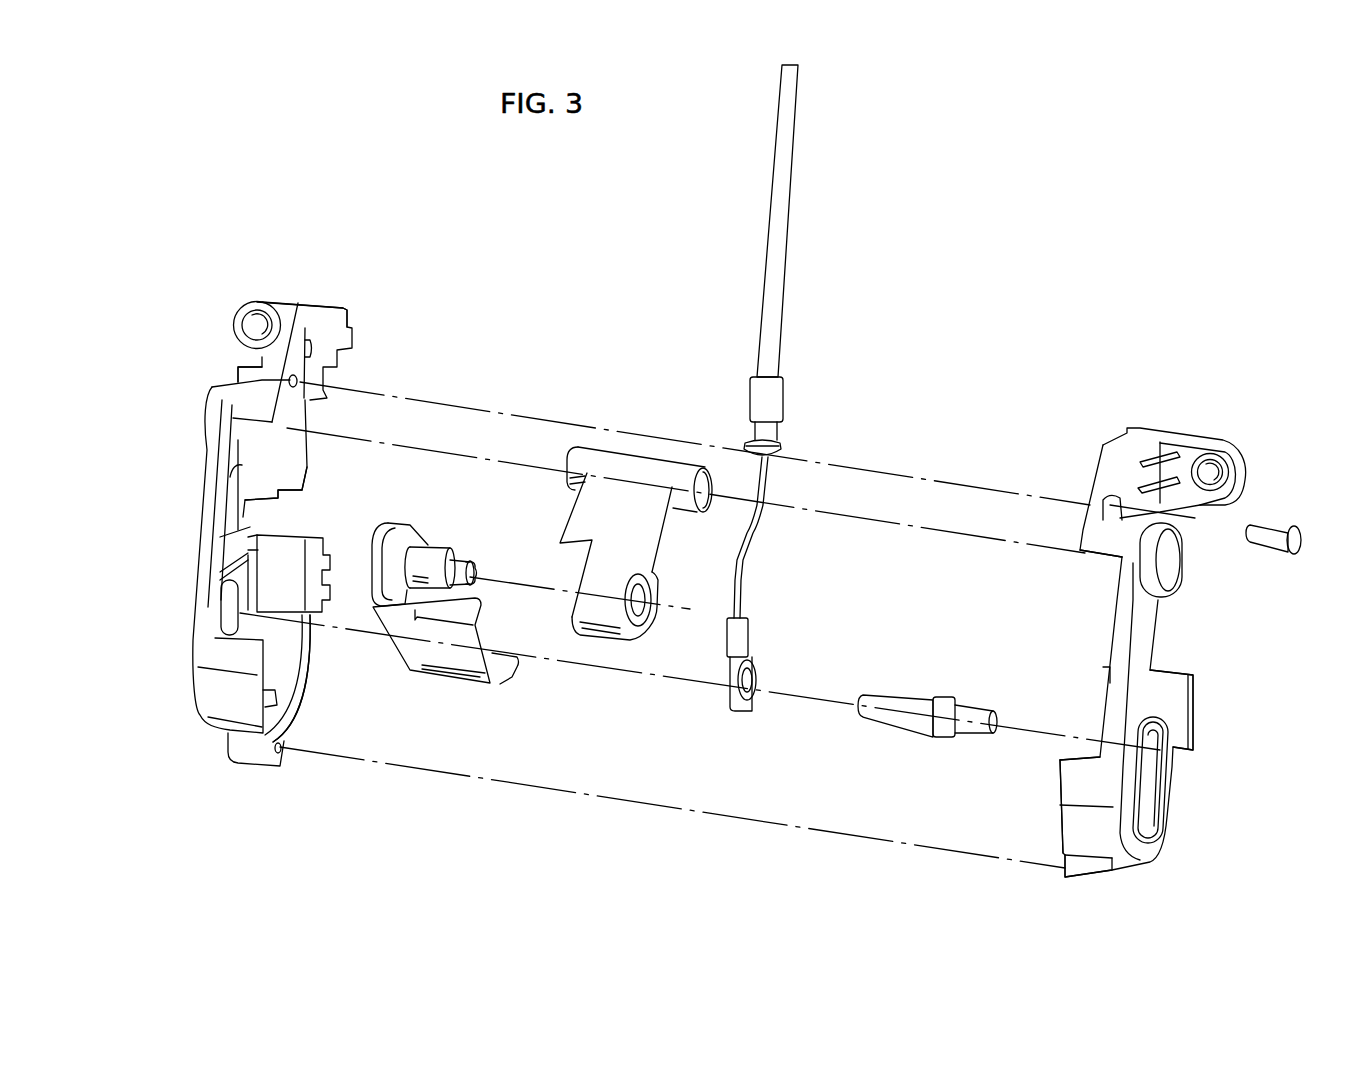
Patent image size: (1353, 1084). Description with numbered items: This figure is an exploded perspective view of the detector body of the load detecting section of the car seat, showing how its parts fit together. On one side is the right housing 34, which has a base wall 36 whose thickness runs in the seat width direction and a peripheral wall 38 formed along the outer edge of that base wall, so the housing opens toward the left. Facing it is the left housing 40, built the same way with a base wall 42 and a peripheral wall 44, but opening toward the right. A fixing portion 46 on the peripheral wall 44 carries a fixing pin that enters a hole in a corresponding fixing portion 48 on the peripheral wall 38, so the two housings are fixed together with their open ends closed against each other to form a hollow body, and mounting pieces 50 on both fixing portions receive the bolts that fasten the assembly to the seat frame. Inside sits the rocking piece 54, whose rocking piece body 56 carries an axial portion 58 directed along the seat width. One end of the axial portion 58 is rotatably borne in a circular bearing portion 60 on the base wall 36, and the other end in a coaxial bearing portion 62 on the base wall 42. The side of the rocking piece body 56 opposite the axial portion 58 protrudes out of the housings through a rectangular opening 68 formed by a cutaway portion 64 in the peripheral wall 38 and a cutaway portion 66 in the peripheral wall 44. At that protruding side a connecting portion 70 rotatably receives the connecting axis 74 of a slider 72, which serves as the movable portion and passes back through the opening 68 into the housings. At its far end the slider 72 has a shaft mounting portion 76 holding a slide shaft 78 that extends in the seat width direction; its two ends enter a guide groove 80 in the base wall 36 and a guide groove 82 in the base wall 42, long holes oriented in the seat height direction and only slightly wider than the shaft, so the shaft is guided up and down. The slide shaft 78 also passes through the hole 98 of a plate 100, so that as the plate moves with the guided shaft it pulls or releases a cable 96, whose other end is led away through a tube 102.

The right housing 34 is at (187, 688).
The base wall 36 is at (248, 532).
The peripheral wall 38 is at (222, 727).
The left housing 40 is at (1165, 855).
The base wall 42 is at (1163, 700).
The peripheral wall 44 is at (1073, 787).
The fixing portion 46 is at (1107, 473).
The fixing portion 48 is at (290, 337).
The mounting pieces 50 is at (234, 321).
The rocking piece 54 is at (598, 538).
The rocking piece body 56 is at (643, 527).
The axial portion 58 is at (640, 468).
The bearing portion 60 is at (248, 452).
The bearing portion 62 is at (1167, 577).
The cutaway portion 64 is at (307, 452).
The cutaway portion 66 is at (1100, 750).
The opening 68 is at (1093, 560).
The connecting portion 70 is at (598, 622).
The slider 72 is at (445, 685).
The connecting axis 74 is at (437, 550).
The shaft mounting portion 76 is at (500, 663).
The slide shaft 78 is at (892, 717).
The guide groove 80 is at (228, 618).
The guide groove 82 is at (1163, 803).
The cable 96 is at (742, 575).
The hole 98 is at (750, 693).
The plate 100 is at (750, 668).
The tube 102 is at (782, 207).